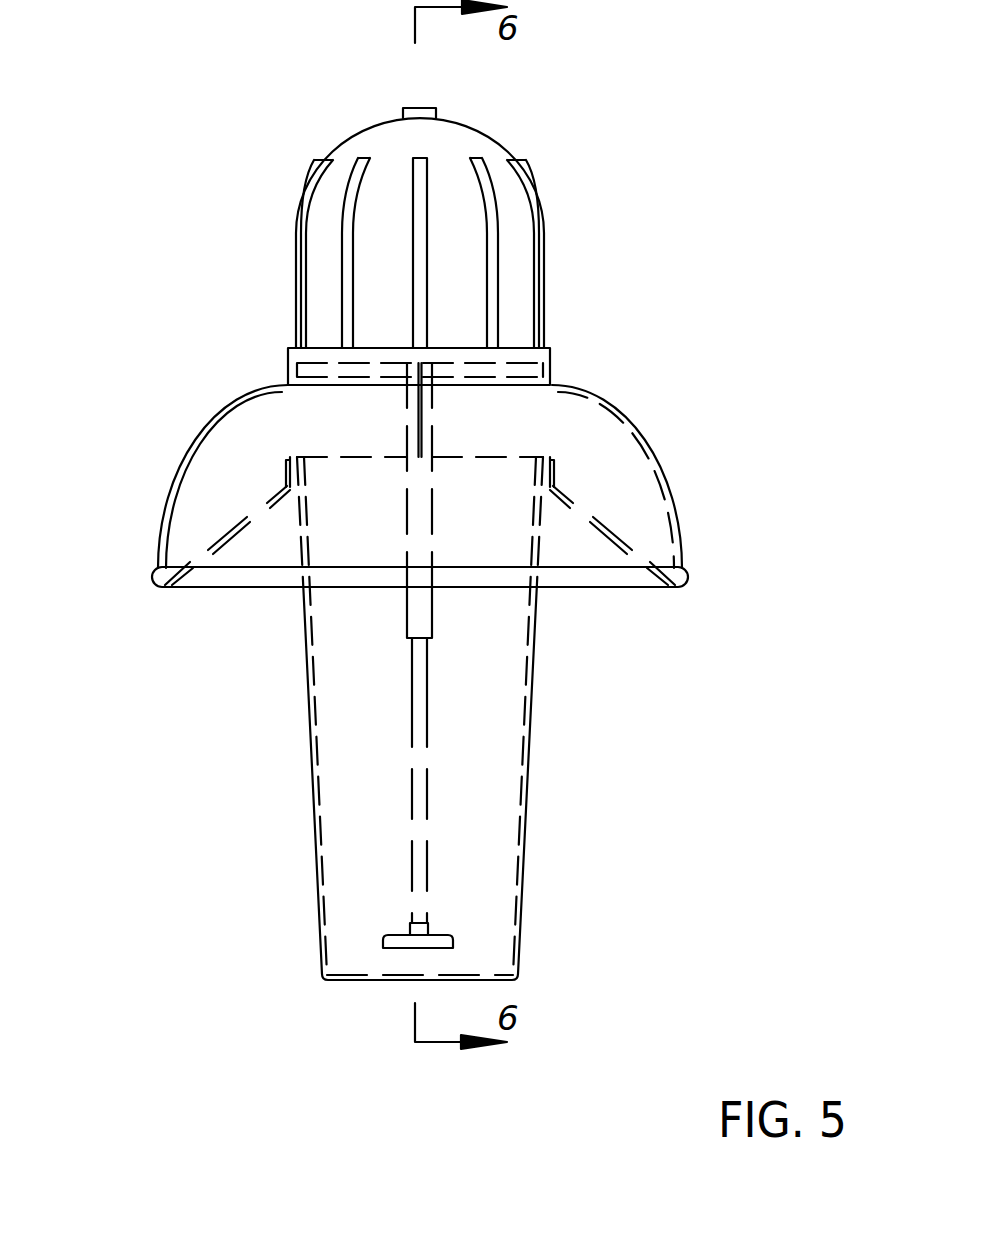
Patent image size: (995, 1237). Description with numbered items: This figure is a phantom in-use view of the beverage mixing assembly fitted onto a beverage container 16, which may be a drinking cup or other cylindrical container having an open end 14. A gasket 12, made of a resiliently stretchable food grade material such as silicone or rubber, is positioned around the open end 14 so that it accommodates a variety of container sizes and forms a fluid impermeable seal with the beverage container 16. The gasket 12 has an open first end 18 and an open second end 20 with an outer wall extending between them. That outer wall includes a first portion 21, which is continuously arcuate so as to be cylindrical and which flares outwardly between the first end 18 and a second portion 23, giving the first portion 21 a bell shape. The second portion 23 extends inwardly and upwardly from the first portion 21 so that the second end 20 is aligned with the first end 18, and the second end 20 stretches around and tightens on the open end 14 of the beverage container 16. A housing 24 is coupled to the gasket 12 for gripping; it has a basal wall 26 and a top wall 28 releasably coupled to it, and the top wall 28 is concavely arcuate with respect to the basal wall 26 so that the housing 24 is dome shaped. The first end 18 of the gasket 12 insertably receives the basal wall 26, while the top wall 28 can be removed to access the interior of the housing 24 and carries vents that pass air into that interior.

The gasket 12 is at (165, 515).
The open end 14 is at (318, 452).
The beverage container 16 is at (312, 773).
The first end 18 is at (548, 348).
The second end 20 is at (552, 460).
The first portion 21 is at (370, 532).
The second portion 23 is at (243, 575).
The housing 24 is at (352, 130).
The basal wall 26 is at (510, 380).
The top wall 28 is at (457, 142).